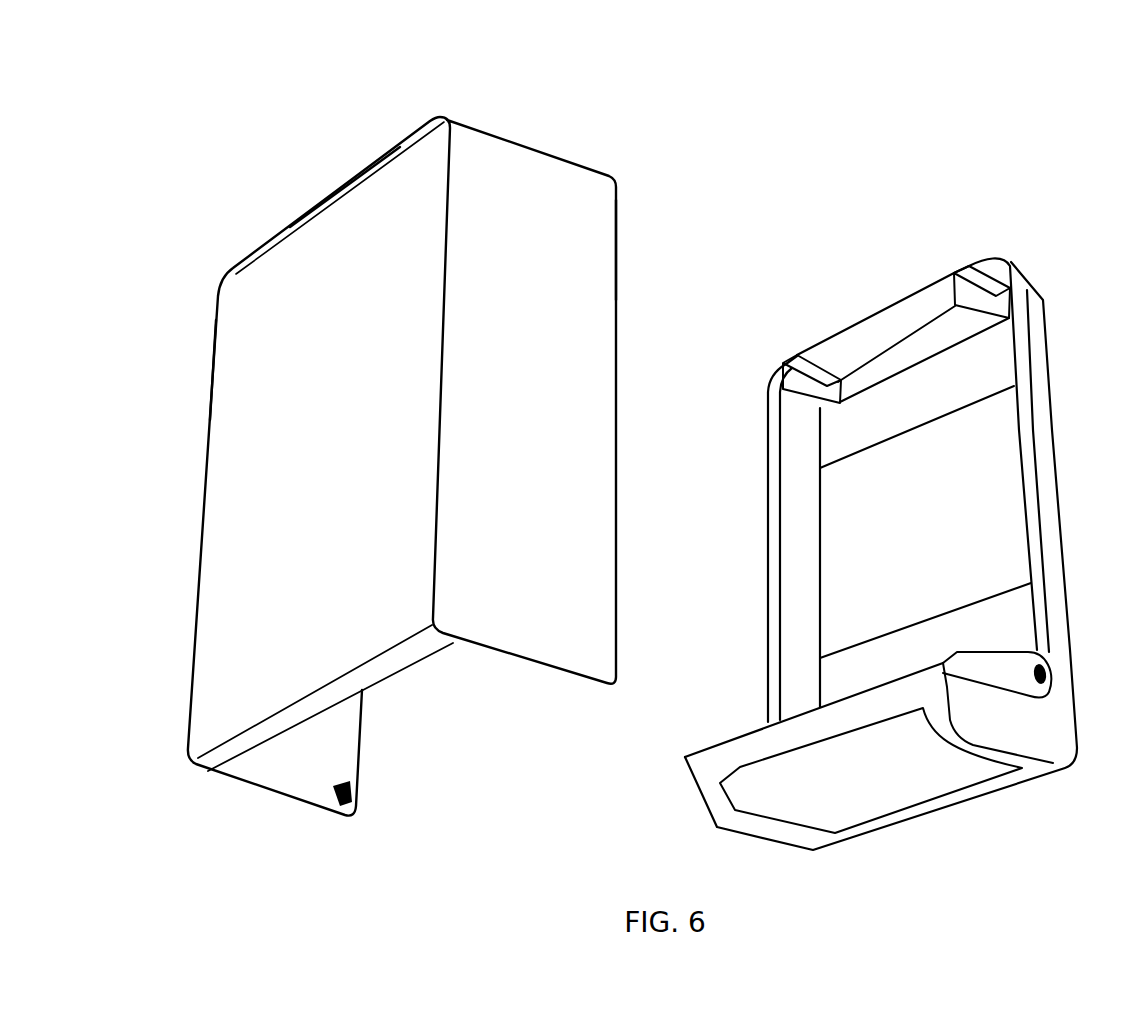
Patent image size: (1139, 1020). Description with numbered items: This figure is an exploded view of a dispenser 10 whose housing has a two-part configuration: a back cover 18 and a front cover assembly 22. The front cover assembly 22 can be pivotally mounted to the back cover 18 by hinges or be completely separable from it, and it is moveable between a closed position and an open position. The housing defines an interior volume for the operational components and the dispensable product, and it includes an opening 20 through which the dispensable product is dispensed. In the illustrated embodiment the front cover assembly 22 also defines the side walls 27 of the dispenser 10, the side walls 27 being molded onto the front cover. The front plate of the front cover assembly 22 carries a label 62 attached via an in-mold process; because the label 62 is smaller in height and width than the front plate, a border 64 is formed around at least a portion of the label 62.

The dispenser 10 is at (812, 98).
The back cover 18 is at (1018, 263).
The opening 20 is at (881, 774).
The front cover assembly 22 is at (469, 118).
The side walls 27 is at (600, 236).
The label 62 is at (225, 340).
The border 64 is at (283, 237).